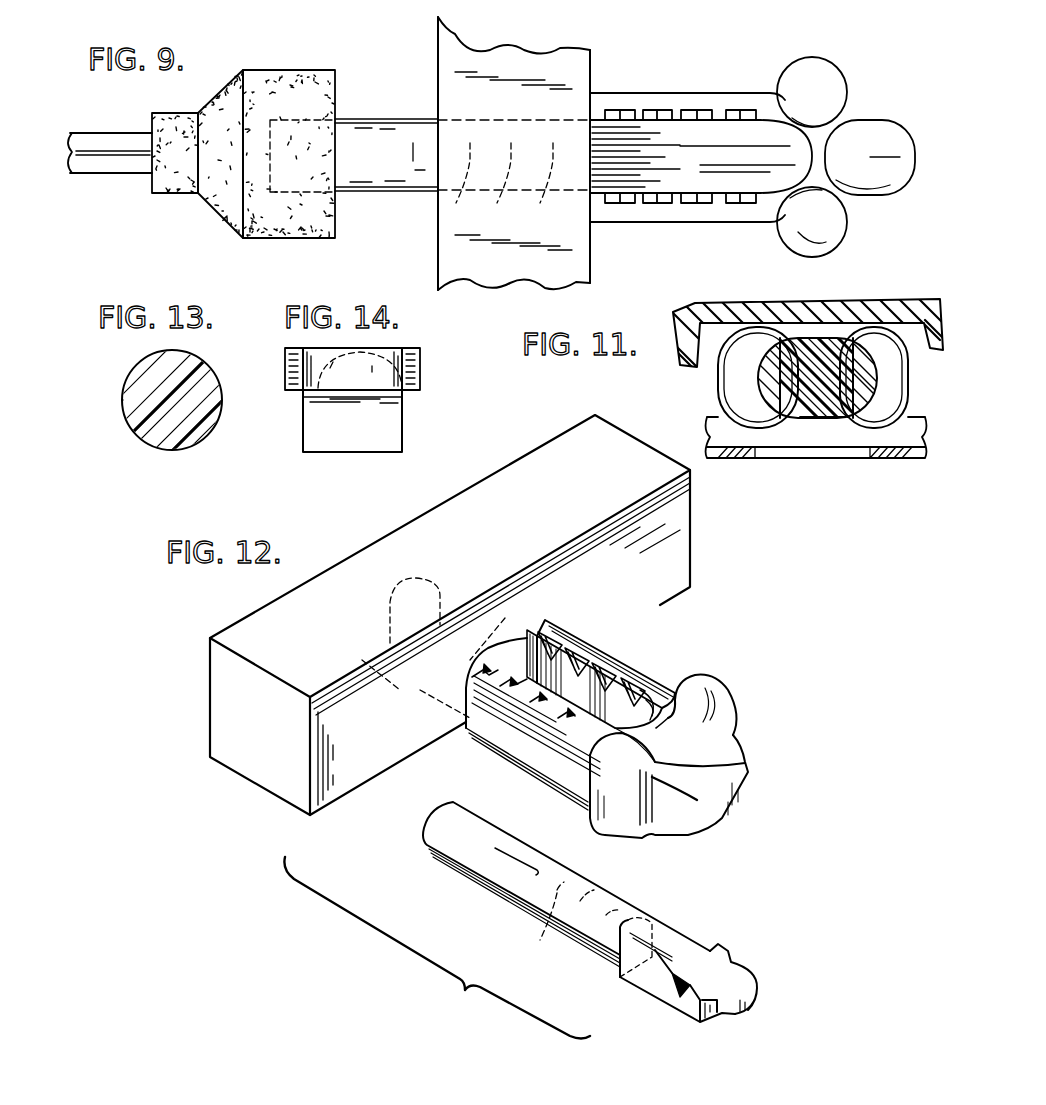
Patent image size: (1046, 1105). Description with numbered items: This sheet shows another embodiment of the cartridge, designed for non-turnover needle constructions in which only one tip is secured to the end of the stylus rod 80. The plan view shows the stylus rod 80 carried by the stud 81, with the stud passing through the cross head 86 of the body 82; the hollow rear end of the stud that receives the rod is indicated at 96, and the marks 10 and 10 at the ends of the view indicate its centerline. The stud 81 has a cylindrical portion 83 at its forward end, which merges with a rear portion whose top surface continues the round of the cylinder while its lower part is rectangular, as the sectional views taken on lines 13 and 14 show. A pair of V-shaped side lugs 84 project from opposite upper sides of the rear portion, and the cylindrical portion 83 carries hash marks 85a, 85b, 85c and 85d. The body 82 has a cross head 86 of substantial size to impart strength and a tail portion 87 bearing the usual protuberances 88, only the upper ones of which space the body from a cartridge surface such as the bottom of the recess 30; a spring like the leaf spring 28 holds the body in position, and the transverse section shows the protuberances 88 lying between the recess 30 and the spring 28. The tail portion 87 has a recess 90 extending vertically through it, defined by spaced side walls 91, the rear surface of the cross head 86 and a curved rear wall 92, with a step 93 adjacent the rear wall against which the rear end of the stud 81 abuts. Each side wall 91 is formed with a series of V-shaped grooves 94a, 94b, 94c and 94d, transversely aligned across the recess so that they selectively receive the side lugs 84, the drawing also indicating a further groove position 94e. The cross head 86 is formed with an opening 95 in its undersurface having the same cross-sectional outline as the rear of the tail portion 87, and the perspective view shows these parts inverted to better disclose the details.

In FIG. 9, the section line indicator 10 is at (60, 150).
In FIG. 11, the leaf spring 28 is at (905, 461).
In FIG. 11, the downwardly opening recess 30 is at (906, 316).
In FIG. 9, the stylus rod 80 is at (104, 165).
In FIG. 9, the stud 81 is at (348, 196).
In FIG. 13, the stud 81 is at (118, 397).
In FIG. 14, the stud 81 is at (406, 421).
In FIG. 12, the stud 81 is at (420, 846).
In FIG. 12, the body 82 is at (205, 665).
In FIG. 9, the cylindrical portion 83 is at (359, 133).
In FIG. 13, the cylindrical portion 83 is at (141, 440).
In FIG. 12, the cylindrical portion 83 is at (452, 863).
In FIG. 9, the side lugs 84 is at (735, 109).
In FIG. 14, the side lugs 84 is at (292, 377).
In FIG. 11, the side lugs 84 is at (772, 402).
In FIG. 12, the side lugs 84 is at (722, 948).
In FIG. 9, the hash mark 85a is at (411, 165).
In FIG. 12, the hash mark 85a is at (493, 853).
In FIG. 9, the hash mark 85b is at (468, 185).
In FIG. 12, the hash mark 85b is at (533, 933).
In FIG. 9, the hash mark 85c is at (517, 185).
In FIG. 12, the hash mark 85c is at (597, 893).
In FIG. 9, the hash mark 85d is at (562, 185).
In FIG. 12, the hash mark 85d is at (621, 913).
In FIG. 9, the cross head 86 is at (438, 47).
In FIG. 12, the cross head 86 is at (500, 478).
In FIG. 12, the tail portion 87 is at (592, 697).
In FIG. 9, the protuberances 88 is at (815, 72).
In FIG. 11, the protuberances 88 is at (868, 334).
In FIG. 12, the protuberances 88 is at (700, 692).
In FIG. 12, the recess 90 is at (607, 705).
In FIG. 11, the side walls 91 is at (775, 378).
In FIG. 12, the side walls 91 is at (598, 662).
In FIG. 12, the curved rear wall 92 is at (730, 753).
In FIG. 12, the step 93 is at (668, 696).
In FIG. 12, the V-shaped groove 94a is at (546, 636).
In FIG. 12, the V-shaped groove 94b is at (573, 652).
In FIG. 12, the V-shaped groove 94c is at (562, 735).
In FIG. 12, the V-shaped groove 94d is at (656, 680).
In FIG. 12, the contact tooth e 94e is at (642, 662).
In FIG. 12, the opening 95 is at (455, 582).
In FIG. 9, the strain relief cone 96 is at (242, 227).
In FIG. 12, the section line 13- 13 is at (538, 845).
In FIG. 12, the section line 14- 14 is at (819, 983).